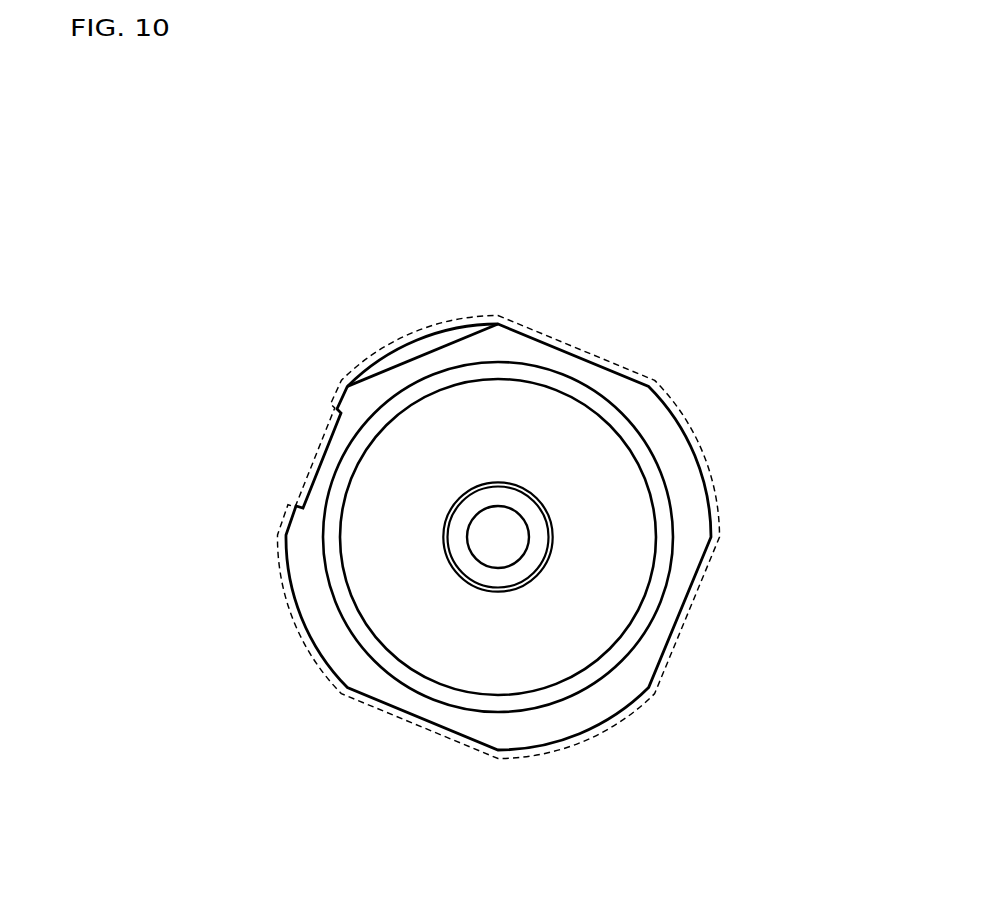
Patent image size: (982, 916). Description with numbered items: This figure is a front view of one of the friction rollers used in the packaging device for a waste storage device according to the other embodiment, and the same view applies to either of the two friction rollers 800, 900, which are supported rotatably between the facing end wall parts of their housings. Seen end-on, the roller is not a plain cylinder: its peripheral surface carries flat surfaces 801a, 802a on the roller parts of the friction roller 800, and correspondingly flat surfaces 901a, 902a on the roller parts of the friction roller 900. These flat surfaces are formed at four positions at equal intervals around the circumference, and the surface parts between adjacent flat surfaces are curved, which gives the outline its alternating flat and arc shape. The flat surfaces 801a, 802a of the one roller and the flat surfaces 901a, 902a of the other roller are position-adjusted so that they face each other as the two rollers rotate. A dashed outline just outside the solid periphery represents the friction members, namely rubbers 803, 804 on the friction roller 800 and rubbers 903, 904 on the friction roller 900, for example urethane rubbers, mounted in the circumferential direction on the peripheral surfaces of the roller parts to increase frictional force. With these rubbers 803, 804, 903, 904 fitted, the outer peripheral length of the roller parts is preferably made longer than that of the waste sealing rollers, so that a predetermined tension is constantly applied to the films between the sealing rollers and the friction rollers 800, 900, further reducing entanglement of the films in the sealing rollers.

The friction roller 800 is at (573, 537).
The friction roller 900 is at (673, 454).
The flat surface 801a is at (482, 501).
The flat surface 802a is at (482, 501).
The flat surface 901a is at (482, 501).
The flat surface 902a is at (550, 342).
The rubber 803 is at (498, 415).
The rubber 804 is at (498, 415).
The rubber 903 is at (498, 415).
The rubber 904 is at (421, 325).